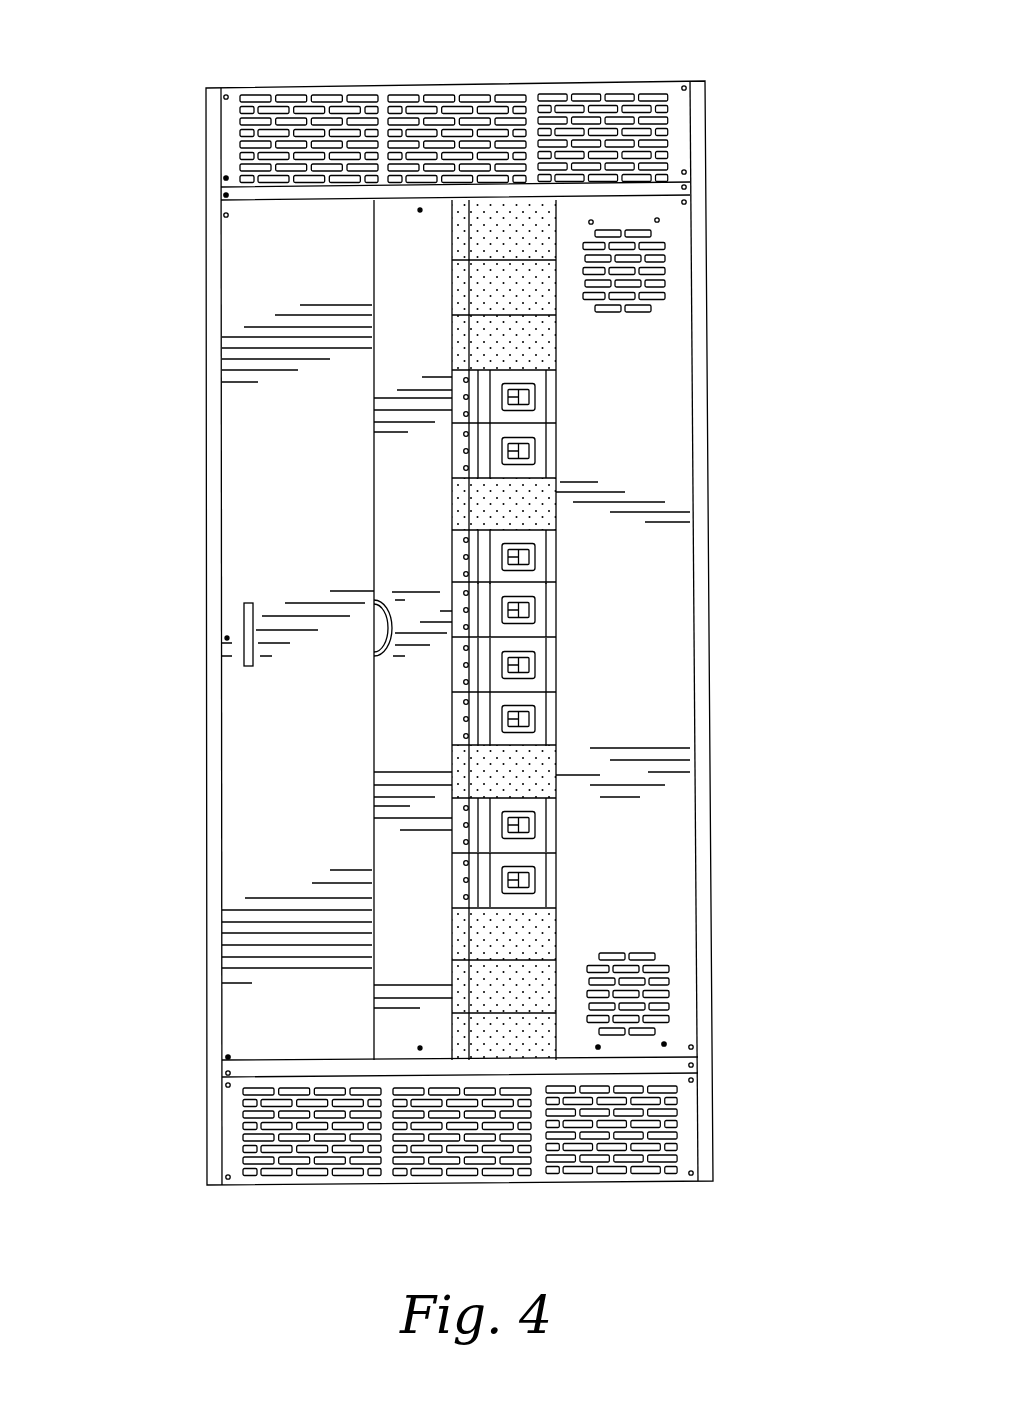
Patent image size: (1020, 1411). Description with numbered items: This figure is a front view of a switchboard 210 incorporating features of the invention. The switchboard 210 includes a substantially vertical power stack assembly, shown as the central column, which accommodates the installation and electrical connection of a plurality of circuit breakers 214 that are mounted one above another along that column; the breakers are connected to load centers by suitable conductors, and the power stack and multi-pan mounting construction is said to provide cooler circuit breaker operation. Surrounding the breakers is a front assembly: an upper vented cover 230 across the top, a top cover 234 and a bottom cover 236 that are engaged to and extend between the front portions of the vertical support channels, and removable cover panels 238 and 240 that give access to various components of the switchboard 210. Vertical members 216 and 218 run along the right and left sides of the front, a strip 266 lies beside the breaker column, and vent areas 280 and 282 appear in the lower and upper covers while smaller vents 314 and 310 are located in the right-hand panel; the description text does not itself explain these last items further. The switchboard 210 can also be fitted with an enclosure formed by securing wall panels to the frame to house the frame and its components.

The switchboard 210 is at (142, 447).
The circuit breakers 214 is at (530, 449).
The right side panel 216 is at (712, 495).
The left side panel 218 is at (207, 872).
The upper vented cover 230 is at (530, 98).
The top cover 234 is at (253, 193).
The bottom cover 236 is at (257, 1062).
The removable cover panel 238 is at (318, 761).
The removable cover panel 240 is at (650, 716).
The mounting rail 266 is at (467, 552).
The vent grilles 280 is at (300, 1170).
The vent openings 282 is at (410, 98).
The lower ventilation grille 310 is at (626, 953).
The upper ventilation grille 314 is at (628, 318).